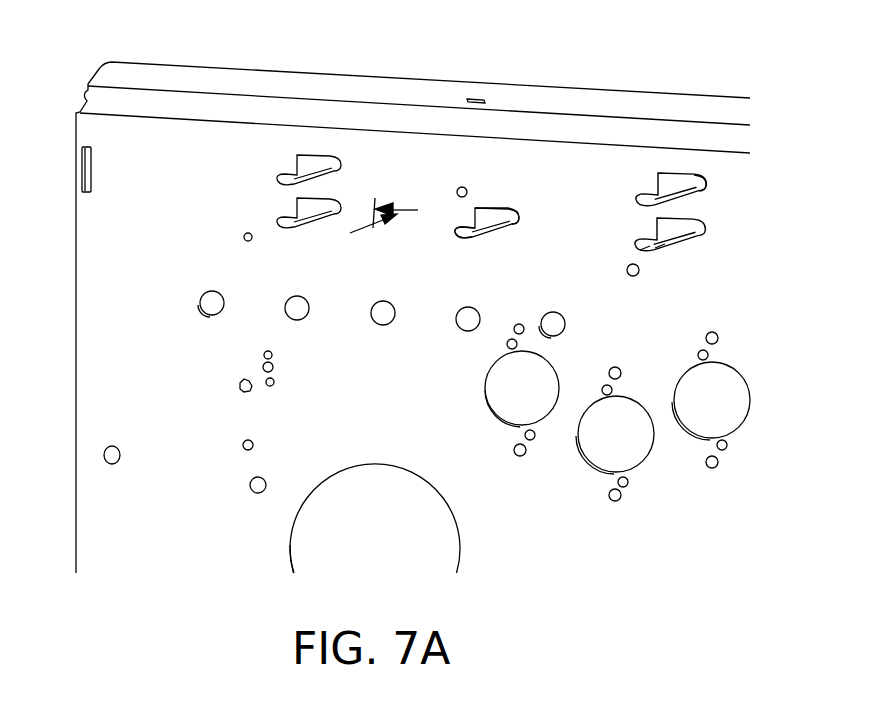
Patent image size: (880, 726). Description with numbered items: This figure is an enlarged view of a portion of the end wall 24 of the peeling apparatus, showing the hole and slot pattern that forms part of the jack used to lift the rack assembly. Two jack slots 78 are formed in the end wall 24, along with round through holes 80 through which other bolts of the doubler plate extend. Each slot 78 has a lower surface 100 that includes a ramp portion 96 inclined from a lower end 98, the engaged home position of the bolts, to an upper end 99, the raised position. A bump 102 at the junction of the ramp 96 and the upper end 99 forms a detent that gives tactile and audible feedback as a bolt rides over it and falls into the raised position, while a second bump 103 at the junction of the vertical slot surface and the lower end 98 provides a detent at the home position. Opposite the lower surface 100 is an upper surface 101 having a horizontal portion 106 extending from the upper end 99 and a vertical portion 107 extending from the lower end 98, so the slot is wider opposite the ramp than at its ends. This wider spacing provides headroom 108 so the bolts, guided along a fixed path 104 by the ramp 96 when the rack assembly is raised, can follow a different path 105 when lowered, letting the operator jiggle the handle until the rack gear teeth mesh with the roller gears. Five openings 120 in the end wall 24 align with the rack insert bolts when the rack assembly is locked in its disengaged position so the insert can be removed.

The end wall 24 is at (100, 276).
The jack slot 78 is at (323, 157).
The round through hole 80 is at (466, 188).
The ramp portion 96 is at (665, 248).
The lower end 98 is at (647, 252).
The upper end 99 is at (698, 233).
The lower surface 100 is at (478, 232).
The upper surface 101 is at (490, 222).
The bump 102 is at (478, 235).
The second bump 103 is at (476, 236).
The fixed path 104 is at (373, 228).
The different path 105 is at (378, 193).
The horizontal portion 106 is at (700, 188).
The vertical portion 107 is at (657, 185).
The headroom 108 is at (296, 210).
The opening 120 is at (203, 314).